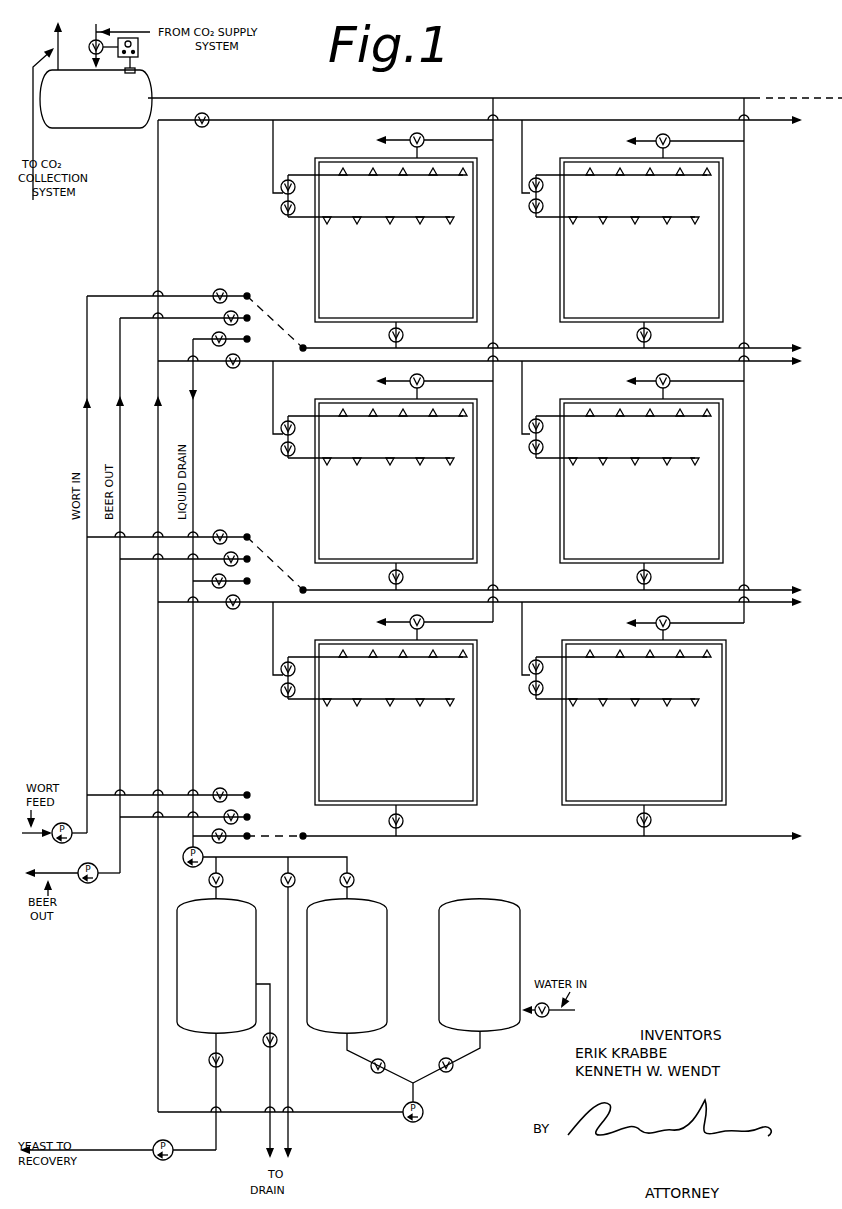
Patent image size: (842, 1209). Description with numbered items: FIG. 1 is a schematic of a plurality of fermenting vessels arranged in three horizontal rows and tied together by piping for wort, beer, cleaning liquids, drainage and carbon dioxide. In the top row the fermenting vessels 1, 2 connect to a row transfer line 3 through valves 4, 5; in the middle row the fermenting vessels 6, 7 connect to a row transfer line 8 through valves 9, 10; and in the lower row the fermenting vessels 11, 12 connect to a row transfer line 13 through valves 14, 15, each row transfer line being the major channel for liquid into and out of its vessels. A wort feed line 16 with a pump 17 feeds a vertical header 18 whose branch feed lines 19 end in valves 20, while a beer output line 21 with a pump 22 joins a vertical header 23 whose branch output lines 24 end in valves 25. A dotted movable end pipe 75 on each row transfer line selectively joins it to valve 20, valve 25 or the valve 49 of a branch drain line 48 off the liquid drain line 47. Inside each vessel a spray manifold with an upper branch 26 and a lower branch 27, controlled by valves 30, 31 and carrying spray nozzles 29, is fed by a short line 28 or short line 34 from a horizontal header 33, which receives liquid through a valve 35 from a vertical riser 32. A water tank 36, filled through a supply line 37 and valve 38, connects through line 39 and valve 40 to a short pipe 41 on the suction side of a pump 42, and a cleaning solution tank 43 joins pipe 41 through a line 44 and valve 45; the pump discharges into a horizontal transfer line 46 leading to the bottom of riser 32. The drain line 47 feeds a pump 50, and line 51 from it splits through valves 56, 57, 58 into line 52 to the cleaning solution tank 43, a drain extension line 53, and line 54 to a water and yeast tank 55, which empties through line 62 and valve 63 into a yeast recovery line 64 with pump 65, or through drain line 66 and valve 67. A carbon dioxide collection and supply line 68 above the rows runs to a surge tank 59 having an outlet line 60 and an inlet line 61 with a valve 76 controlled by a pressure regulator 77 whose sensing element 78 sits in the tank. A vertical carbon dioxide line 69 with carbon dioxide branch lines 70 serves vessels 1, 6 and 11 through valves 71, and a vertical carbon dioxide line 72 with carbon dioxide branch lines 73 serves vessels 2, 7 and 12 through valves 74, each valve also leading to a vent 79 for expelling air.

The fermenting vessel 1 is at (314, 284).
The fermenting vessel 2 is at (559, 287).
The row transfer line 3 is at (469, 346).
The valve 4 is at (404, 335).
The valve 5 is at (652, 335).
The fermenting vessel 6 is at (314, 524).
The fermenting vessel 7 is at (559, 528).
The row transfer line 8 is at (343, 590).
The valve 9 is at (404, 577).
The valve 10 is at (652, 577).
The fermenting vessel 11 is at (314, 776).
The fermenting vessel 12 is at (561, 779).
The row transfer line 13 is at (534, 834).
The valve 14 is at (404, 821).
The valve 15 is at (652, 820).
The wort feed line 16 is at (78, 838).
The pump 17 is at (66, 820).
The vertical header 18 is at (86, 647).
The branch feed line 19 is at (124, 292).
The valve 20 is at (223, 289).
The beer output line 21 is at (107, 880).
The pump 22 is at (90, 884).
The vertical header 23 is at (119, 710).
The branch output line 24 is at (134, 316).
The valve 25 is at (223, 314).
The upper branch 26 is at (384, 177).
The lower branch 27 is at (375, 218).
The short line 28 is at (272, 157).
The spray nozzle 29 is at (446, 185).
The valve 30 is at (287, 178).
The valve 31 is at (281, 212).
The vertical riser 32 is at (156, 238).
The horizontal header 33 is at (304, 121).
The short line 34 is at (523, 131).
The valve 35 is at (201, 128).
The water tank 36 is at (521, 925).
The supply line 37 is at (530, 1016).
The valve 38 is at (544, 1017).
The line 39 is at (460, 1055).
The valve 40 is at (451, 1072).
The short pipe 41 is at (414, 1076).
The pump 42 is at (420, 1120).
The cleaning solution tank 43 is at (388, 992).
The line 44 is at (347, 1051).
The valve 45 is at (376, 1073).
The horizontal transfer line 46 is at (342, 1114).
The liquid drain line 47 is at (194, 717).
The branch drain line 48 is at (195, 340).
The valve 49 is at (215, 334).
The pump 50 is at (186, 866).
The line 51 is at (333, 855).
The line 52 is at (356, 888).
The drain extension line 53 is at (287, 957).
The line 54 is at (218, 893).
The water and yeast tank 55 is at (258, 925).
The valve 56 is at (353, 874).
The valve 57 is at (296, 878).
The valve 58 is at (224, 876).
The surge tank 59 is at (85, 129).
The outlet line 60 is at (55, 35).
The inlet line 61 is at (94, 35).
The line 62 is at (215, 1090).
The valve 63 is at (209, 1061).
The yeast recovery line 64 is at (201, 1152).
The pump 65 is at (156, 1160).
The drain line 66 is at (269, 1081).
The valve 67 is at (262, 1040).
The carbon dioxide collection and supply line 68 is at (580, 98).
The vertical carbon dioxide line 69 is at (492, 131).
The carbon dioxide branch line 70 is at (460, 138).
The valve 71 is at (421, 133).
The vertical carbon dioxide line 72 is at (745, 160).
The carbon dioxide branch line 73 is at (725, 138).
The valve 74 is at (666, 136).
The movable end pipe 75 is at (262, 302).
The valve 76 is at (91, 52).
The pressure regulator 77 is at (138, 48).
The sensing element 78 is at (135, 70).
The vent 79 is at (390, 138).